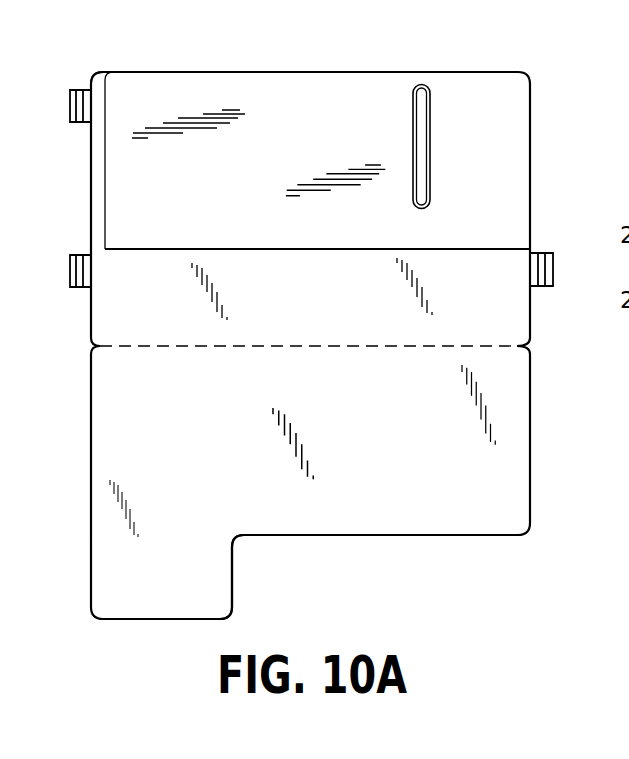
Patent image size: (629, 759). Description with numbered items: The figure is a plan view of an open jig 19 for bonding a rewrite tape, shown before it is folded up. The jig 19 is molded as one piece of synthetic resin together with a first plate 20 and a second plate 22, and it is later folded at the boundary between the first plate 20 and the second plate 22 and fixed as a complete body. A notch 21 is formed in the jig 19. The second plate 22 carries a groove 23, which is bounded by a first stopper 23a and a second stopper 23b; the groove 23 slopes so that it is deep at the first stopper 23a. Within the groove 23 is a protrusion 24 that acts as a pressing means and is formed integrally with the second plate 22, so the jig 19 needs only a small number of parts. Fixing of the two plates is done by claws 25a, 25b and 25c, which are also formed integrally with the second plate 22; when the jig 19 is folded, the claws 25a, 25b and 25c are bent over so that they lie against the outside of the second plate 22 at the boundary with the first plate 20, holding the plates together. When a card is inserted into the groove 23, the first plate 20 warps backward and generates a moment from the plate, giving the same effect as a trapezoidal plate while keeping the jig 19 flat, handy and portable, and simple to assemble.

The jig for bonding the rewrite tape 19 is at (123, 622).
The first plate 20 is at (218, 580).
The notch 21 is at (397, 535).
The second plate 22 is at (518, 310).
The groove 23 is at (517, 145).
The first stopper 23a is at (517, 250).
The second stopper 23b is at (110, 83).
The protrusion 24 is at (425, 92).
The claw 25a is at (68, 113).
The claw 25b is at (68, 278).
The claw 25c is at (553, 270).